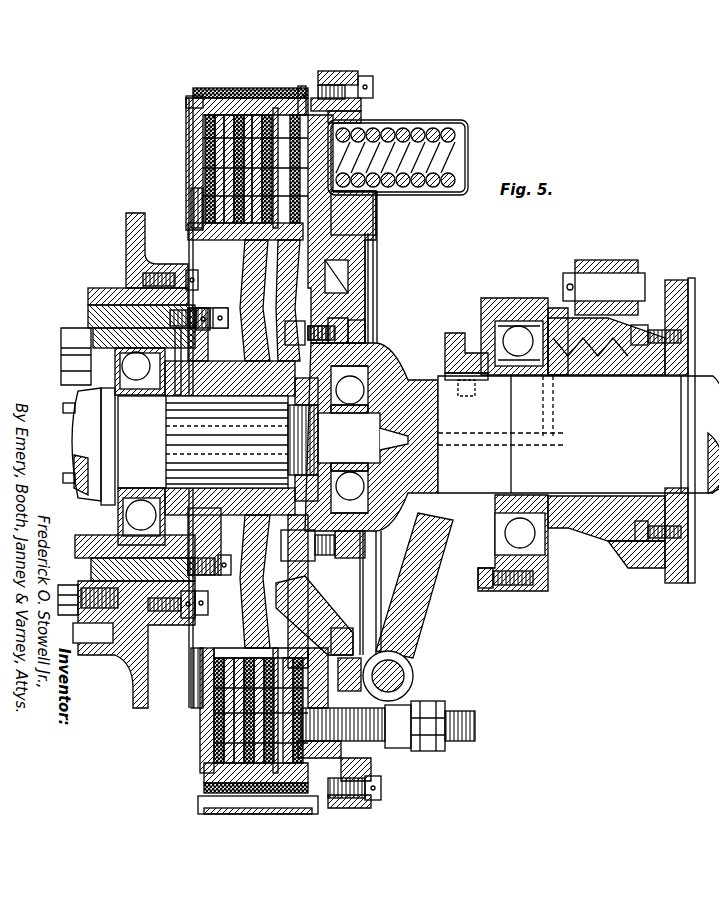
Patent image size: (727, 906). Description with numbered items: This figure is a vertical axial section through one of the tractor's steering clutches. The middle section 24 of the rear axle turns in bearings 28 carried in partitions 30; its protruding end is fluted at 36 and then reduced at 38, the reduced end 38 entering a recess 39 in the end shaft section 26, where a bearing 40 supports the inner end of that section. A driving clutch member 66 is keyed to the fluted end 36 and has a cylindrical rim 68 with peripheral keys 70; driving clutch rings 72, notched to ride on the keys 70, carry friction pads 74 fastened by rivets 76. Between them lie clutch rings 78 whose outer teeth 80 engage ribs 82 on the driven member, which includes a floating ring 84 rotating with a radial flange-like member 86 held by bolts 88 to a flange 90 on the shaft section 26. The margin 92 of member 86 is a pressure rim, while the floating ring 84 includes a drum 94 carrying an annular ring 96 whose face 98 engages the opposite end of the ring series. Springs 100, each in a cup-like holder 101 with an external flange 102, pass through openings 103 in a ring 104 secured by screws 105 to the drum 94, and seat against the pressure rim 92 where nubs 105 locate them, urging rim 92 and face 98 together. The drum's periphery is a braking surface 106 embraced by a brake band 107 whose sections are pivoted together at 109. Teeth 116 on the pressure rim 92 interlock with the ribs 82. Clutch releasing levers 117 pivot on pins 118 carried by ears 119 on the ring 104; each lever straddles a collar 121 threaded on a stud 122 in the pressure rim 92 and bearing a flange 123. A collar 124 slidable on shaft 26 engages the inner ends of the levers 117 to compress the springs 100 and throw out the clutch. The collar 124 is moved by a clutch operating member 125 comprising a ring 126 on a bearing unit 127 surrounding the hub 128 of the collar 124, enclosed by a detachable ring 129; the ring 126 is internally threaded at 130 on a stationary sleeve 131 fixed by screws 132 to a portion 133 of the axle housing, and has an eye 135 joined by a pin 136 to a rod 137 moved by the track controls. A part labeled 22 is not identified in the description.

The lower clutch plates 22 is at (215, 650).
The middle section of rear axle 24 is at (75, 428).
The end shaft section 26 is at (418, 372).
The bearings 28 is at (90, 300).
The partitions 30 is at (118, 206).
The fluted end 36 is at (165, 433).
The reduced end 38 is at (360, 420).
The recess 39 is at (395, 430).
The bearing 40 is at (372, 512).
The driving clutch member 66 is at (237, 256).
The cylindrical rim 68 is at (182, 236).
The peripheral keys 70 is at (190, 218).
The driving clutch rings 72 is at (198, 120).
The friction pads 74 is at (208, 140).
The rivets 76 is at (190, 195).
The clutch rings 78 is at (250, 108).
The teeth 80 is at (240, 110).
The ribs 82 is at (268, 102).
The floating ring 84 is at (180, 95).
The flange-like member 86 is at (362, 272).
The bolts 88 is at (350, 322).
The flange 90 is at (335, 310).
The pressure rim 92 is at (295, 95).
The cylindrical drum 94 is at (196, 780).
The annular ring 96 is at (192, 740).
The face 98 is at (217, 154).
The springs 100 is at (446, 113).
The cup-like holder 101 is at (460, 120).
The annular external flange 102 is at (366, 212).
The opening 103 is at (370, 200).
The ring 104 is at (360, 225).
The screws 105 is at (366, 73).
The braking surface 106 is at (180, 90).
The brake band 107 is at (195, 82).
The brake band pivot 109 is at (200, 795).
The notches or teeth 116 is at (353, 96).
The clutch releasing levers 117 is at (400, 610).
The pin 118 is at (396, 668).
The ears 119 is at (370, 740).
The collar 121 is at (390, 708).
The stud 122 is at (460, 730).
The flange 123 is at (420, 740).
The collar 124 is at (447, 327).
The clutch operating member 125 is at (572, 555).
The ring 126 is at (530, 300).
The bearing unit 127 is at (510, 315).
The hub 128 is at (487, 535).
The detachable ring 129 is at (478, 292).
The internal threads 130 is at (605, 535).
The stationary sleeve 131 is at (600, 365).
The screws 132 is at (680, 328).
The housing portion 133 is at (672, 272).
The eye 135 is at (600, 252).
The pin 136 is at (610, 268).
The rod 137 is at (568, 262).